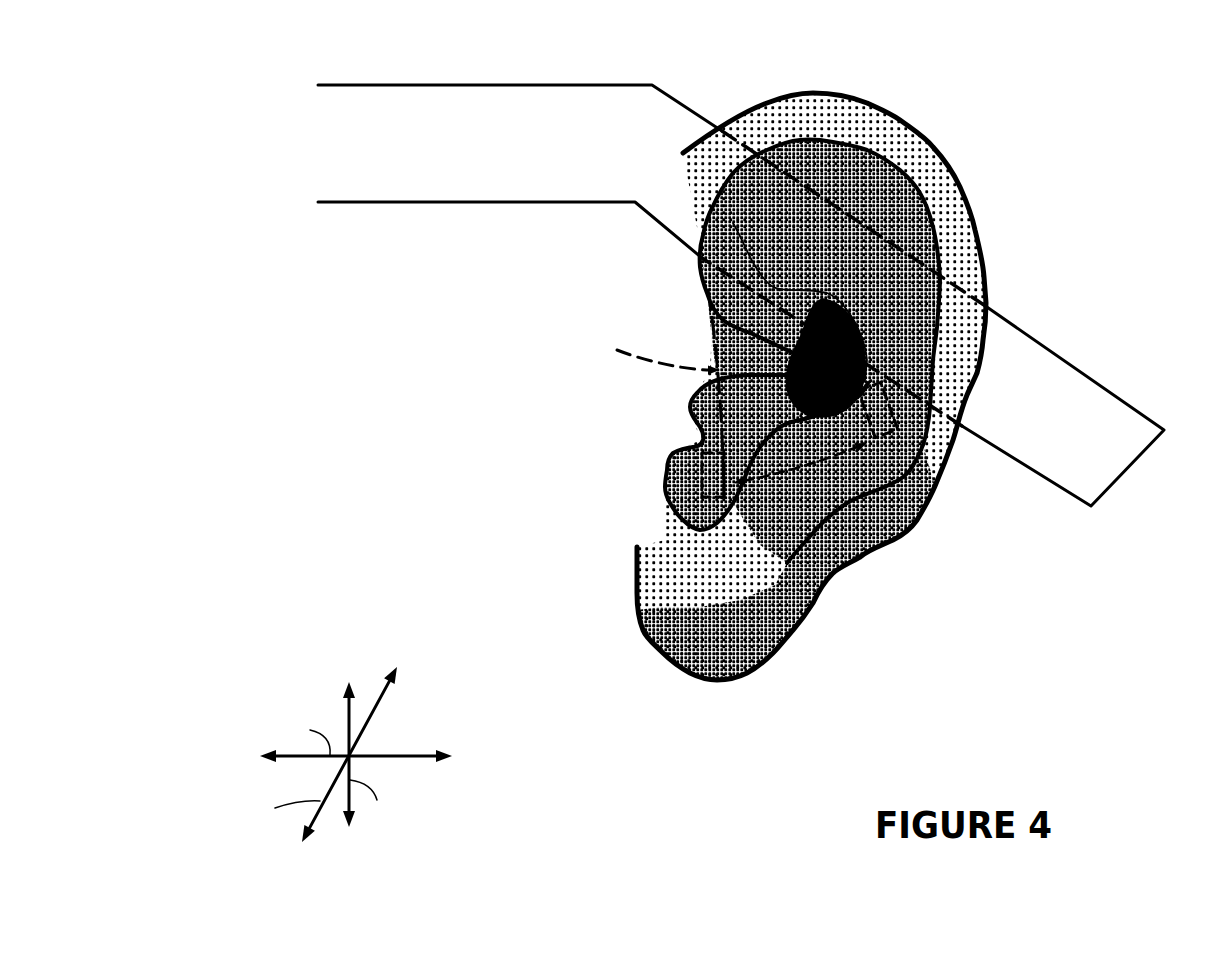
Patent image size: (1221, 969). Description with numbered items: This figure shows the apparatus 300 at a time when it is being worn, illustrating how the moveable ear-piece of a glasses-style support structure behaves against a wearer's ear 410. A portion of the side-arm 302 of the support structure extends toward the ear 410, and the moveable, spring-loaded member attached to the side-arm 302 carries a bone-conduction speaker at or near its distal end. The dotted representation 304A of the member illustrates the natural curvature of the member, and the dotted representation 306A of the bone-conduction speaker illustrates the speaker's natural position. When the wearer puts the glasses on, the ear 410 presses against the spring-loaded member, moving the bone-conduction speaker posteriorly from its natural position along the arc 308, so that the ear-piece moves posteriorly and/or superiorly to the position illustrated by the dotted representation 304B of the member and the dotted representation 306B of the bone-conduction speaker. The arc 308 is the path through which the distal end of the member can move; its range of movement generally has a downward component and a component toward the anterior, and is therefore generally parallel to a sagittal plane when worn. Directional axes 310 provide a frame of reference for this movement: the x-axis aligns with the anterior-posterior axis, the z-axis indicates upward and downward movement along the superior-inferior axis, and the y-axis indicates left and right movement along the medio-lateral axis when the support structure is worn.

The apparatus 300 is at (666, 293).
The side-arm 302 is at (493, 178).
The dotted representation of member 304A is at (617, 350).
The dotted representation of member 304B is at (915, 412).
The dotted representation of bone-conduction speaker 306A is at (708, 486).
The dotted representation of bone-conduction speaker 306B is at (884, 440).
The arc 308 is at (824, 487).
The directional axes 310 is at (238, 689).
The ear 410 is at (956, 66).